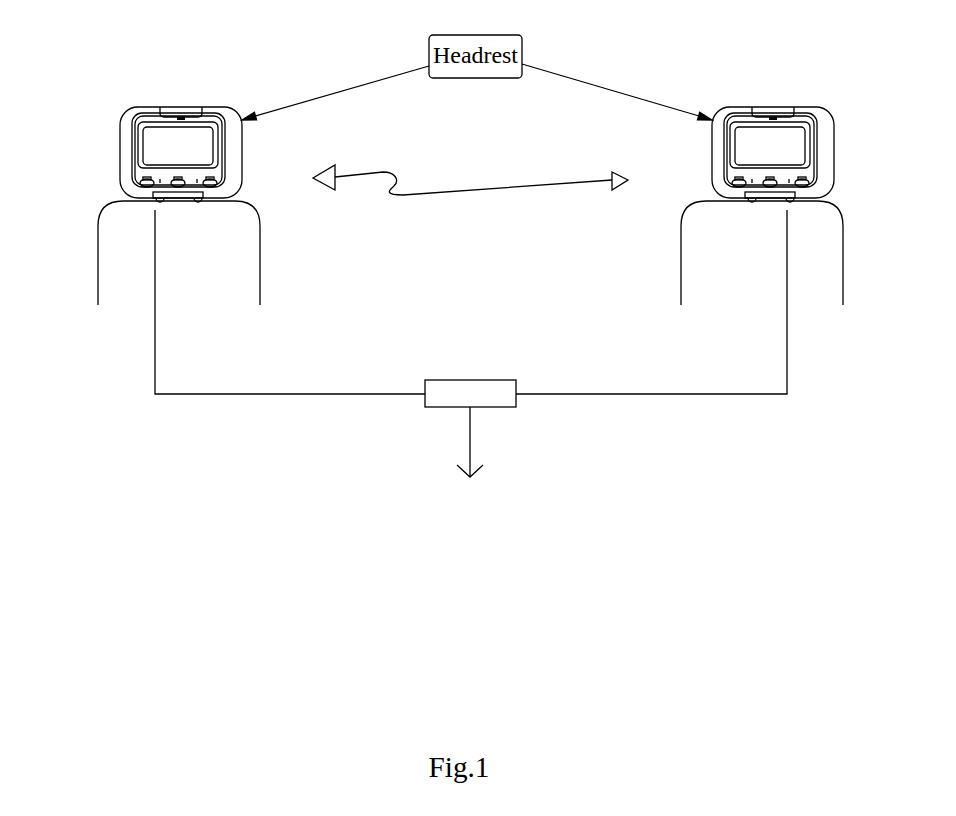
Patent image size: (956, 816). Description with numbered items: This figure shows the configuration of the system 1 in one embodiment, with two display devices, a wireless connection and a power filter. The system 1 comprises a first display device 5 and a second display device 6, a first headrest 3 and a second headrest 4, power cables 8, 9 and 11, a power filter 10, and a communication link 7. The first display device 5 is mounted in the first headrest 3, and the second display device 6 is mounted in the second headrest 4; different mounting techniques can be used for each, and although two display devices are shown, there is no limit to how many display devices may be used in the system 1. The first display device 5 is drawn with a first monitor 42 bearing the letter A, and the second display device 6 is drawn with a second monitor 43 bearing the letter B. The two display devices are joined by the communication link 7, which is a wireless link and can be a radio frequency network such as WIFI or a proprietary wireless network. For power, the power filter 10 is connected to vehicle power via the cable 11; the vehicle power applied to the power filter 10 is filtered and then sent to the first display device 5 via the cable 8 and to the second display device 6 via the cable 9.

The system 1 is at (127, 358).
The first headrest 3 is at (230, 103).
The second headrest 4 is at (720, 112).
The first display device 5 is at (160, 140).
The second display device 6 is at (793, 142).
The first monitor 42 is at (155, 152).
The second monitor 43 is at (743, 137).
The communication link 7 is at (492, 195).
The cable 8 is at (283, 393).
The cable 9 is at (597, 390).
The power filter 10 is at (452, 390).
The cable 11 is at (482, 452).